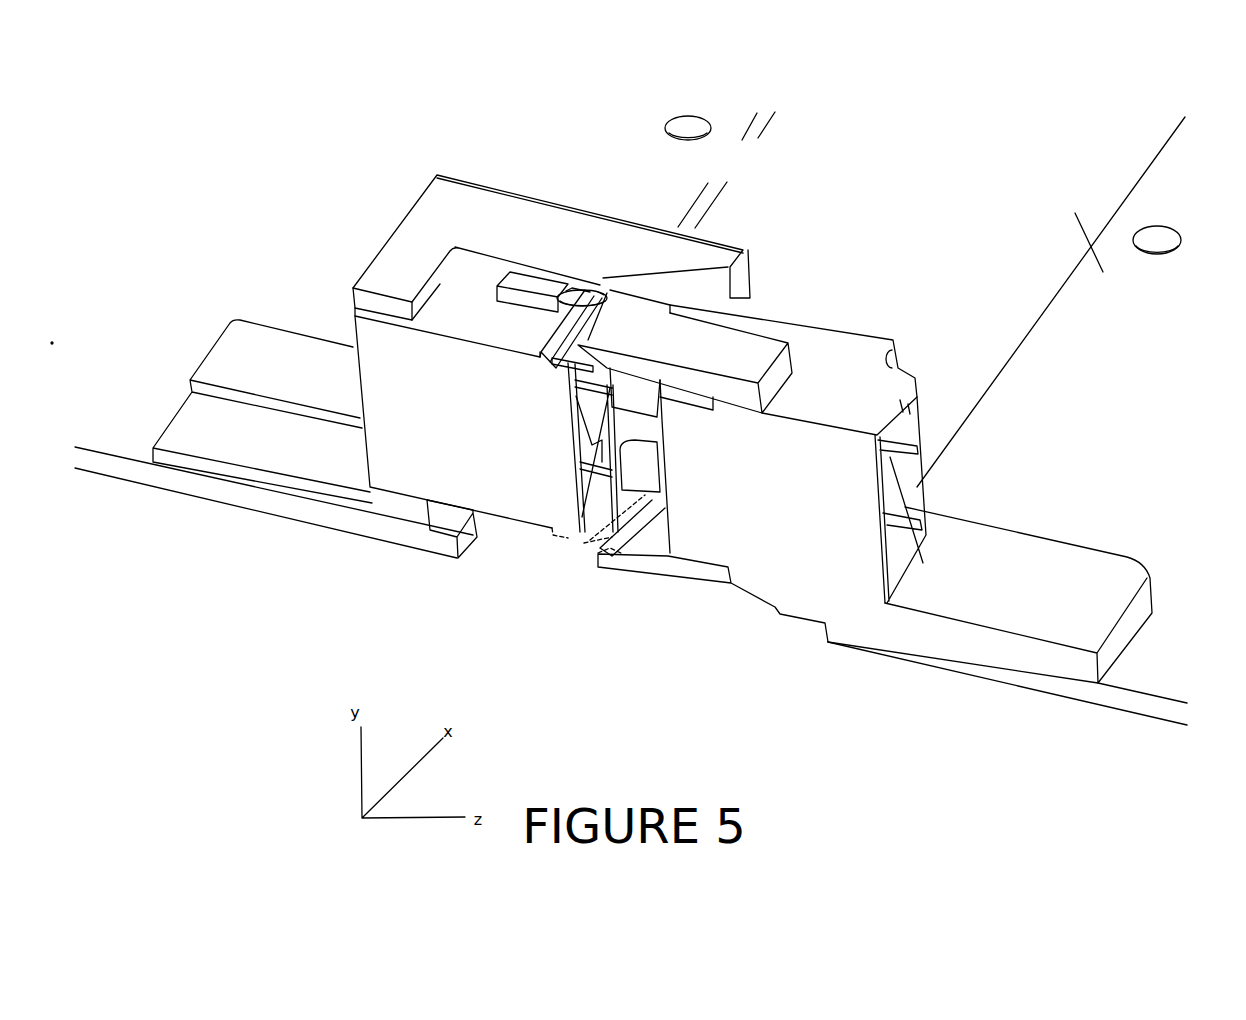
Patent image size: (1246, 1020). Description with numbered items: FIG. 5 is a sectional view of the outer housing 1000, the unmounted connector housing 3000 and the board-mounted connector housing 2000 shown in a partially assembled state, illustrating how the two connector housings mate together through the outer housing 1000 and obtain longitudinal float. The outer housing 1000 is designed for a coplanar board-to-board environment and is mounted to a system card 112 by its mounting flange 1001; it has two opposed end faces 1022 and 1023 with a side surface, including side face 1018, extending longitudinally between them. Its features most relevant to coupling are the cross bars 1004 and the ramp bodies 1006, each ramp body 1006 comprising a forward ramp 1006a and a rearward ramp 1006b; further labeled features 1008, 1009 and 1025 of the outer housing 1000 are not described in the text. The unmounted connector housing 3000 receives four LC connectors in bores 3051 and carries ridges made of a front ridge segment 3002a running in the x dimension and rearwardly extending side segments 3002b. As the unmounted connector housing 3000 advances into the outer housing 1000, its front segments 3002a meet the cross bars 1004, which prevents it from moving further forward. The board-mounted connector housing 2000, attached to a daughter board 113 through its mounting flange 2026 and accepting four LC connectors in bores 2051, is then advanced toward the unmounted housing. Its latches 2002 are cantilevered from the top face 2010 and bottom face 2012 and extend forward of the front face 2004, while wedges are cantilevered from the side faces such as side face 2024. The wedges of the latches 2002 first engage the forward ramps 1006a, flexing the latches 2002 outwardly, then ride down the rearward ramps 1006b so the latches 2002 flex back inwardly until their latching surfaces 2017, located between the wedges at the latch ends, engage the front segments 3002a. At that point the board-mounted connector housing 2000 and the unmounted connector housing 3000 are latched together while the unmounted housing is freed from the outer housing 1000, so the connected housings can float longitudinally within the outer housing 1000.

The system card 112 is at (760, 128).
The daughter board 113 is at (1104, 222).
The outer housing 1000 is at (632, 235).
The mounting flange 1001 is at (265, 447).
The cross bar 1004 is at (570, 343).
The ramp body 1006 is at (588, 290).
The forward ramp 1006a is at (600, 291).
The rearward ramp 1006b is at (570, 290).
The top surface 1008 is at (440, 270).
The rib 1009 is at (375, 272).
The side face 1018 is at (672, 212).
The end face 1022 is at (345, 280).
The end face 1023 is at (740, 278).
The corner 1025 is at (466, 258).
The board-mounted connector housing 2000 is at (842, 350).
The latch 2002 is at (707, 350).
The front face 2004 is at (655, 517).
The top face 2010 is at (855, 383).
The bottom face 2012 is at (780, 625).
The latching surface 2017 is at (616, 366).
The side face 2024 is at (820, 307).
The mounting flange 2026 is at (1117, 575).
The bore 2051 is at (907, 543).
The unmounted connector housing 3000 is at (410, 470).
The front ridge segment 3002a is at (557, 332).
The side segment 3002b is at (507, 283).
The bore 3051 is at (593, 480).